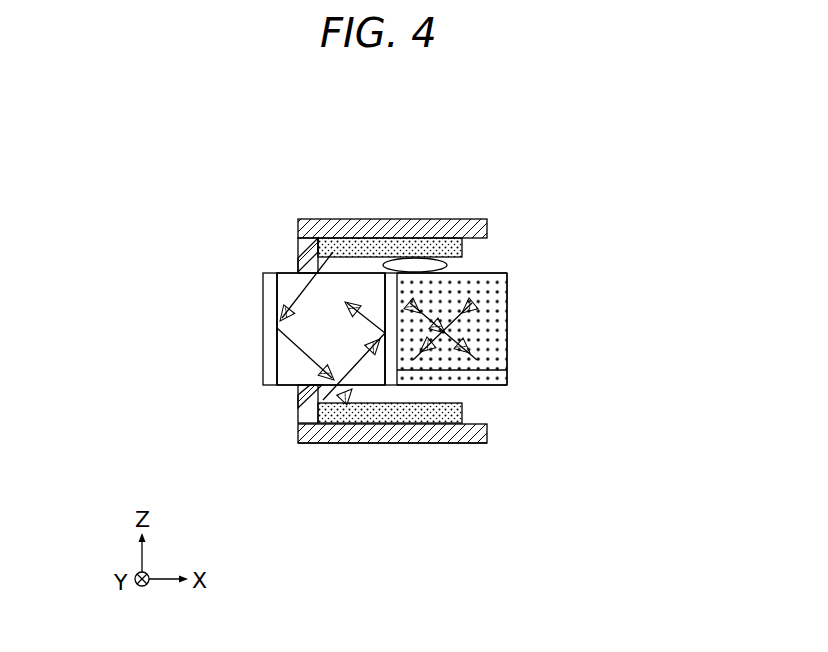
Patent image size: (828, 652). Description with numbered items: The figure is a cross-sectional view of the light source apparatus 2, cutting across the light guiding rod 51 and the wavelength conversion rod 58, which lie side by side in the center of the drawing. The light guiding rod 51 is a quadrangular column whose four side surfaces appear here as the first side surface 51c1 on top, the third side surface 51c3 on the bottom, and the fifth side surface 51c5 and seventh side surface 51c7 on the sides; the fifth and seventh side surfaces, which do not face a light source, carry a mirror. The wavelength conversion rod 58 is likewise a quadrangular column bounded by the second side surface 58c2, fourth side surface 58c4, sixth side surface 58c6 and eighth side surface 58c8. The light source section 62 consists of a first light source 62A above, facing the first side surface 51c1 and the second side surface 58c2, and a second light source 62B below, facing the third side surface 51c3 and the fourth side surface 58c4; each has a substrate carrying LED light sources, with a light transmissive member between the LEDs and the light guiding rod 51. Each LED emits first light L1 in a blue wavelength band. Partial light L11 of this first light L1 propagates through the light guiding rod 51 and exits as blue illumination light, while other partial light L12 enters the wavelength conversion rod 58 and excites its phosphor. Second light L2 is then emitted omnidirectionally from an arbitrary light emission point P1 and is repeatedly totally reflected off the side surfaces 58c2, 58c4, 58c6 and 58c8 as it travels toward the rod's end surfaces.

The light source apparatus 2 is at (333, 193).
The light source section 62 is at (357, 362).
The first light source 62A is at (357, 191).
The second light source 62B is at (392, 500).
The light guiding rod 51 is at (289, 397).
The first side surface 51c1 is at (297, 273).
The third side surface 51c3 is at (288, 387).
The fifth side surface 51c5 is at (382, 373).
The seventh side surface 51c7 is at (277, 342).
The wavelength conversion rod 58 is at (506, 344).
The second side surface 58c2 is at (441, 290).
The fourth side surface 58c4 is at (490, 388).
The sixth side surface 58c6 is at (507, 370).
The eighth side surface 58c8 is at (507, 283).
The first light L1 is at (297, 265).
The partial light L11 is at (292, 303).
The other partial light L12 is at (445, 272).
The second light L2 is at (452, 337).
The light emission point P1 is at (443, 333).